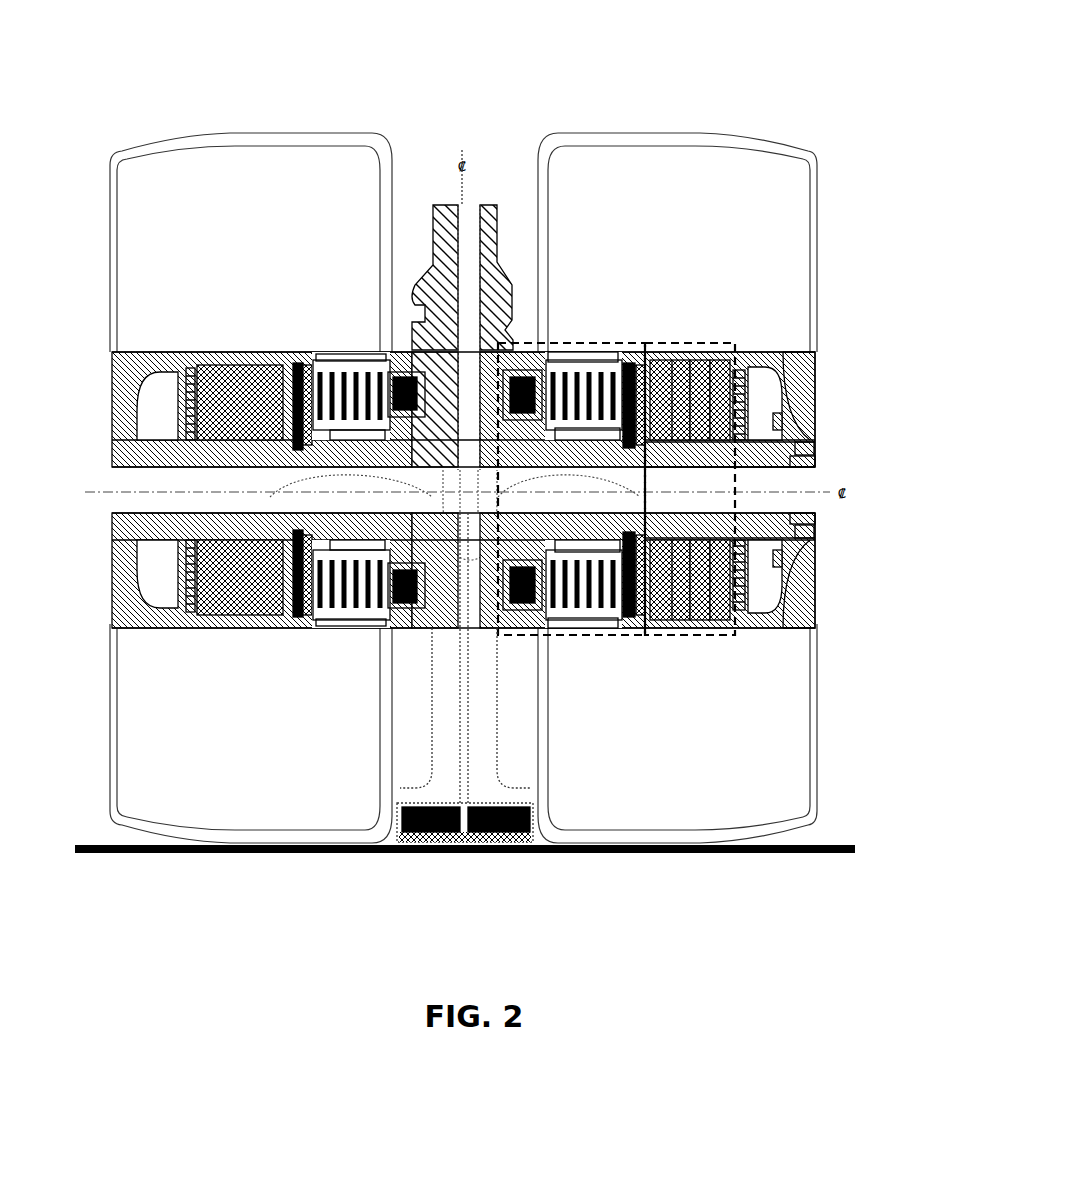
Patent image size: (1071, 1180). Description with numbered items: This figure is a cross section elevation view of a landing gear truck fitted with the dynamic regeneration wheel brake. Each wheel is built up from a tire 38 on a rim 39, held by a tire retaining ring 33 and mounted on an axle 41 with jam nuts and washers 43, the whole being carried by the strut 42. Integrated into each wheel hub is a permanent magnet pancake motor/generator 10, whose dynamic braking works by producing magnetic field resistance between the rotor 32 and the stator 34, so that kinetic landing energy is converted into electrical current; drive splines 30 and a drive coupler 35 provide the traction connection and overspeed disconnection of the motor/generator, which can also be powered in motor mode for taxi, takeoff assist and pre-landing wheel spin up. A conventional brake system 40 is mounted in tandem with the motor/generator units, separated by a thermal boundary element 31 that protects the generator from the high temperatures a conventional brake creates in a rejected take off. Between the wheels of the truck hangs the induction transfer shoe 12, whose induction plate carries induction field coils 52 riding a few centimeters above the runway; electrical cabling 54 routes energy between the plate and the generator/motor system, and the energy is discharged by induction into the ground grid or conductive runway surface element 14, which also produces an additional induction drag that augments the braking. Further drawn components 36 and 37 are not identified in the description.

The motor/generator 10 is at (733, 343).
The induction transfer shoe 12 is at (432, 767).
The conductive runway surface element 14 is at (465, 845).
The drive splines 30 is at (702, 380).
The thermal boundary element 31 is at (640, 445).
The rotor 32 is at (718, 380).
The tire retaining ring 33 is at (810, 362).
The stator 34 is at (675, 395).
The drive coupler 35 is at (785, 420).
The battery 36 is at (505, 830).
The fasteners 37 is at (795, 445).
The tire 38 is at (712, 140).
The rim 39 is at (565, 345).
The conventional brake system 40 is at (576, 340).
The axle 41 is at (820, 462).
The strut 42 is at (490, 218).
The jam nuts and washers 43 is at (815, 448).
The induction field coils 52 is at (420, 830).
The electrical cabling 54 is at (462, 228).